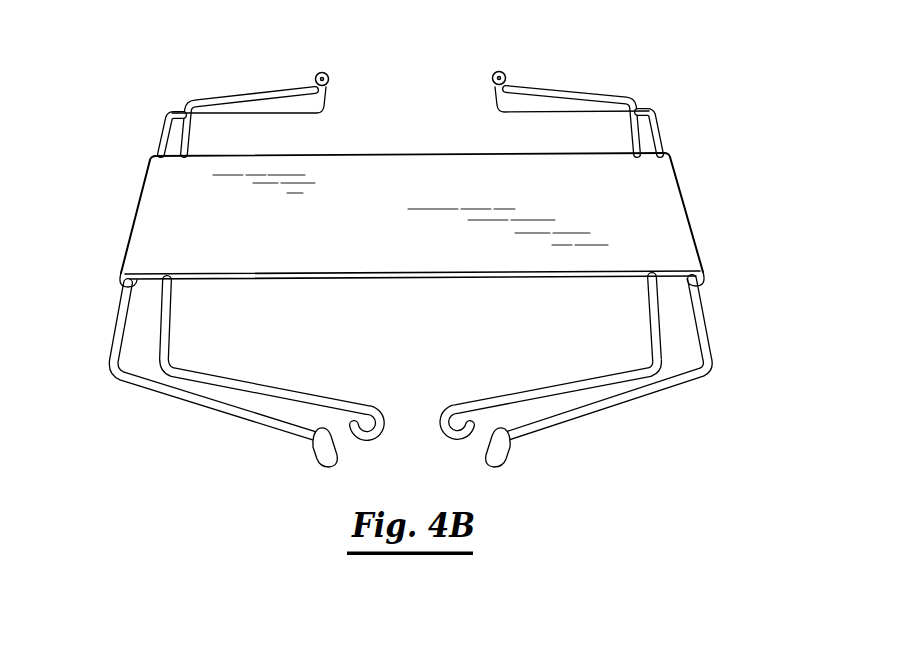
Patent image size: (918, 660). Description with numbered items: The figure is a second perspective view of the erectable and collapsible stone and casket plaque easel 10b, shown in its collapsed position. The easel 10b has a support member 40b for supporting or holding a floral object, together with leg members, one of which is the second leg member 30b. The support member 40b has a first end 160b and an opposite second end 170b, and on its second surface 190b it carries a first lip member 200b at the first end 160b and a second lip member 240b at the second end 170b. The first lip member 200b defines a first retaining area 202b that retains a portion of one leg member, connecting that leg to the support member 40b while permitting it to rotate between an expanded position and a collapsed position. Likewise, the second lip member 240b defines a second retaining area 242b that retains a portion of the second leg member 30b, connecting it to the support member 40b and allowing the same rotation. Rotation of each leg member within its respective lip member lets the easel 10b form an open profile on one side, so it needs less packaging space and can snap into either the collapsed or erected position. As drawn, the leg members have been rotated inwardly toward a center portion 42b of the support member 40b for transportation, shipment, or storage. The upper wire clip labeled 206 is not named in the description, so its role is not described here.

The stone and casket plaque easel 10b is at (613, 70).
The second leg member 30b is at (665, 100).
The support member 40b is at (377, 153).
The center portion 42b is at (318, 278).
The first end 160b is at (138, 208).
The second end 170b is at (685, 197).
The second surface 190b is at (452, 278).
The first lip member 200b is at (138, 288).
The first retaining area 202b is at (120, 288).
The upper wire clip 206 is at (157, 110).
The second lip member 240b is at (682, 285).
The second retaining area 242b is at (702, 282).